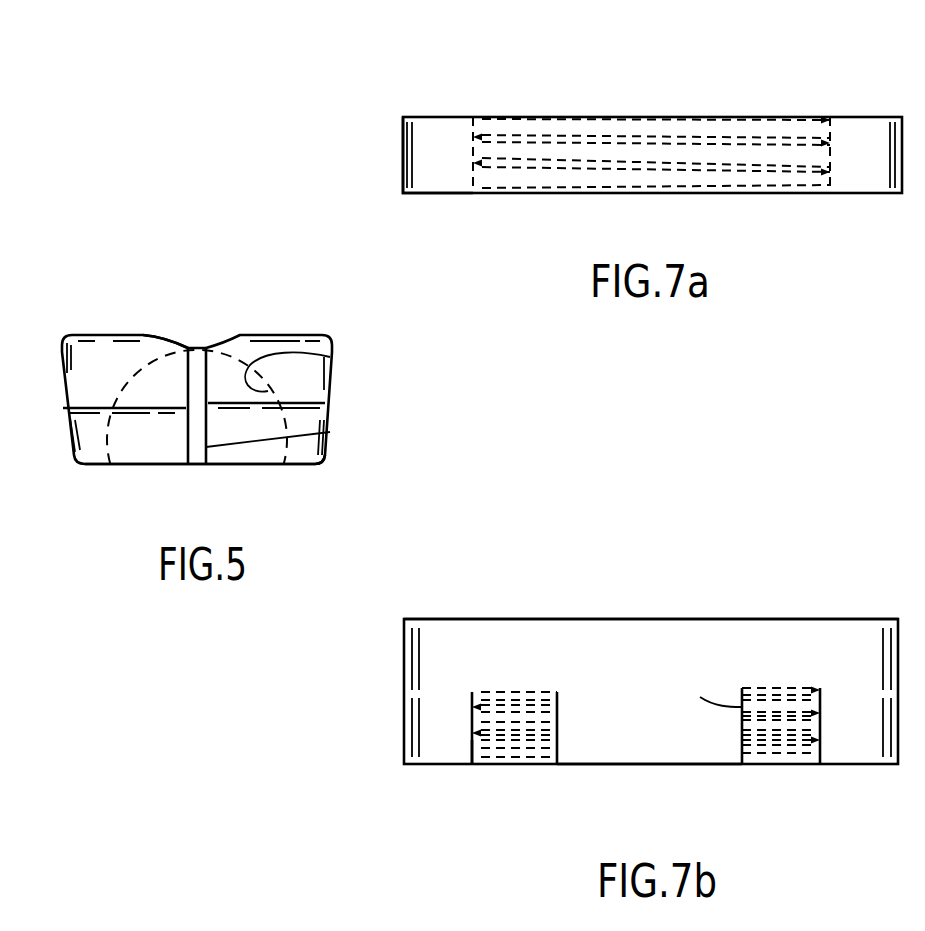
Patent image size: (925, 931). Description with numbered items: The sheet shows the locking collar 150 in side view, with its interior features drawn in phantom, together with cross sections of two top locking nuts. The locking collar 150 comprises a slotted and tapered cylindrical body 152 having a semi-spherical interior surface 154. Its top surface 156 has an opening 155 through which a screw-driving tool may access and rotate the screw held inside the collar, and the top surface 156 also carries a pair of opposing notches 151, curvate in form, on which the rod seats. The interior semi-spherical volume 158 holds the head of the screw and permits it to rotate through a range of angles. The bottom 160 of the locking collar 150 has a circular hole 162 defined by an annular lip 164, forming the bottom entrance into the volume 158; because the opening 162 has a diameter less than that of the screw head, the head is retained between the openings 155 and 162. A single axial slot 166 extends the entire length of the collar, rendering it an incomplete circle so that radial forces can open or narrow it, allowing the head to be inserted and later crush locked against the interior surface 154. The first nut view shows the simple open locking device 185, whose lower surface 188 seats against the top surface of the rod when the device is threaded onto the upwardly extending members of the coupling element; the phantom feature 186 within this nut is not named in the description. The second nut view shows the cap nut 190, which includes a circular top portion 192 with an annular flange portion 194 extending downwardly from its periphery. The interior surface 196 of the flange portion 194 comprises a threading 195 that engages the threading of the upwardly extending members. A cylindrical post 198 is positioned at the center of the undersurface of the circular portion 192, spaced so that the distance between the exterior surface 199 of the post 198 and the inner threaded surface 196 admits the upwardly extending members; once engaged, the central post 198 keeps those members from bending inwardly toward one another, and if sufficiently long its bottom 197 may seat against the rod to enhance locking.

In FIG. 5, the locking collar 150 is at (290, 315).
In FIG. 5, the opposing notches 151 is at (232, 337).
In FIG. 5, the slotted and tapered cylindrical body 152 is at (78, 373).
In FIG. 5, the semi-spherical interior surface 154 is at (330, 357).
In FIG. 5, the opening 155 is at (187, 340).
In FIG. 5, the top surface 156 is at (127, 328).
In FIG. 5, the interior semi-spherical volume 158 is at (168, 449).
In FIG. 5, the bottom 160 is at (122, 467).
In FIG. 5, the circular hole 162 is at (233, 468).
In FIG. 5, the annular lip 164 is at (293, 467).
In FIG. 5, the axial slot 166 is at (330, 432).
In FIG. 7A, the locking device 185 is at (870, 102).
In FIG. 7A, the fastening elements 186 is at (827, 175).
In FIG. 7A, the lower surface 188 is at (438, 202).
In FIG. 7B, the strip member 190 is at (468, 610).
In FIG. 7B, the circular top portion 192 is at (653, 615).
In FIG. 7B, the annular flange portion 194 is at (440, 767).
In FIG. 7B, the threading 195 is at (477, 747).
In FIG. 7B, the interior surface 196 is at (530, 738).
In FIG. 7B, the bottom 197 is at (627, 764).
In FIG. 7B, the cylindrical post 198 is at (697, 747).
In FIG. 7B, the exterior surface 199 is at (700, 697).